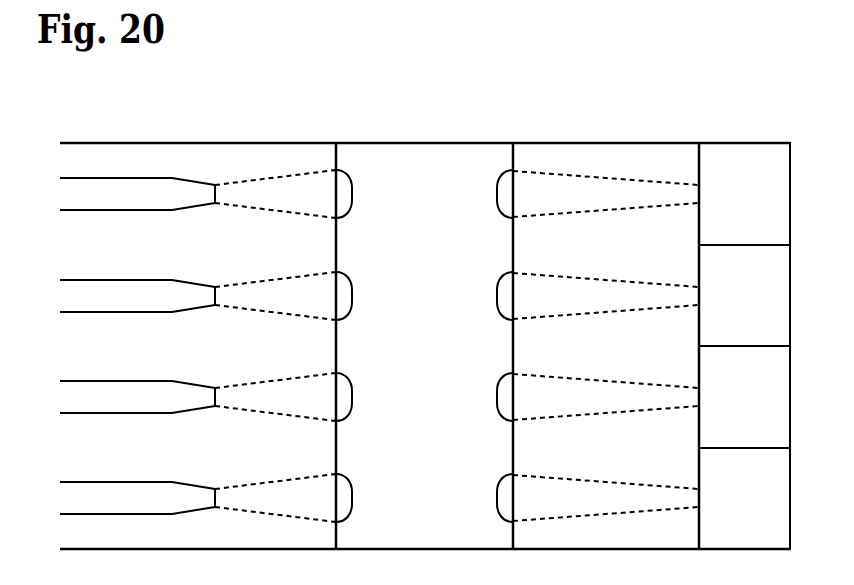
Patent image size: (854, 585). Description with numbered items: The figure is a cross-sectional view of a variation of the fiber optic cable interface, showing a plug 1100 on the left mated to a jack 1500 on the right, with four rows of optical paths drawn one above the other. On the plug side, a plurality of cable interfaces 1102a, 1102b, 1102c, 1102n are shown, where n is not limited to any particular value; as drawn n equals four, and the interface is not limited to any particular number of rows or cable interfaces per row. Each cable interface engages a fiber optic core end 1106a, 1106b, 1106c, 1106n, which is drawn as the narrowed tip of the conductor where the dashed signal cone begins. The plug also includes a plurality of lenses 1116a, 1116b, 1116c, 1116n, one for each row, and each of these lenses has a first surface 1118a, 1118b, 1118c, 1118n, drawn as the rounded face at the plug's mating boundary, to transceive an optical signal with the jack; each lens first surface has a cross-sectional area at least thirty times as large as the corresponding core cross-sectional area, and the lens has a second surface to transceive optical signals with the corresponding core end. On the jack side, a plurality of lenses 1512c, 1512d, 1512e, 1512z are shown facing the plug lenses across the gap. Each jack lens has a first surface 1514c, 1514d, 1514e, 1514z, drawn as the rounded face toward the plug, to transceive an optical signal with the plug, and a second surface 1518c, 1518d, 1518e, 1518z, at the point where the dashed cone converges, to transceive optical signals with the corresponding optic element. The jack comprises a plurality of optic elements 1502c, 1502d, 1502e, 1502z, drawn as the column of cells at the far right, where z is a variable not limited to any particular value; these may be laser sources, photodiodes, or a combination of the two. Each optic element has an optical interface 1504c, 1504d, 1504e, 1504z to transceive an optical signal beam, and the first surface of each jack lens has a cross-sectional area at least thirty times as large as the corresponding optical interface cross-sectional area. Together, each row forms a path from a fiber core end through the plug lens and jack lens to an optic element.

The plug 1100 is at (177, 123).
The jack 1500 is at (644, 124).
The cable interface 1102a is at (209, 193).
The cable interface 1102b is at (137, 296).
The cable interface 1102c is at (137, 397).
The cable interface 1102n is at (137, 498).
The fiber optic core end 1106a is at (243, 168).
The fiber optic core end 1106b is at (245, 277).
The fiber optic core end 1106c is at (245, 378).
The fiber optic core end 1106n is at (245, 479).
The lens 1116a is at (343, 204).
The lens 1116b is at (279, 296).
The lens 1116c is at (279, 397).
The lens 1116n is at (279, 498).
The lens first surface 1118a is at (358, 194).
The lens first surface 1118b is at (394, 297).
The lens first surface 1118c is at (394, 398).
The lens first surface 1118n is at (394, 499).
The lens first surface 1514c is at (493, 193).
The lens first surface 1514d is at (454, 295).
The lens first surface 1514e is at (454, 396).
The lens first surface 1514z is at (454, 497).
The lens 1512c is at (580, 204).
The lens 1512d is at (606, 296).
The lens 1512e is at (606, 397).
The lens 1512z is at (606, 498).
The lens second surface 1518c is at (696, 193).
The lens second surface 1518d is at (663, 278).
The lens second surface 1518e is at (663, 379).
The lens second surface 1518z is at (663, 480).
The optic element 1502c is at (778, 172).
The optic element 1502d is at (744, 295).
The optic element 1502e is at (744, 397).
The optic element 1502z is at (744, 498).
The optical interface 1504c is at (704, 193).
The optical interface 1504d is at (733, 316).
The optical interface 1504e is at (733, 417).
The optical interface 1504z is at (733, 518).